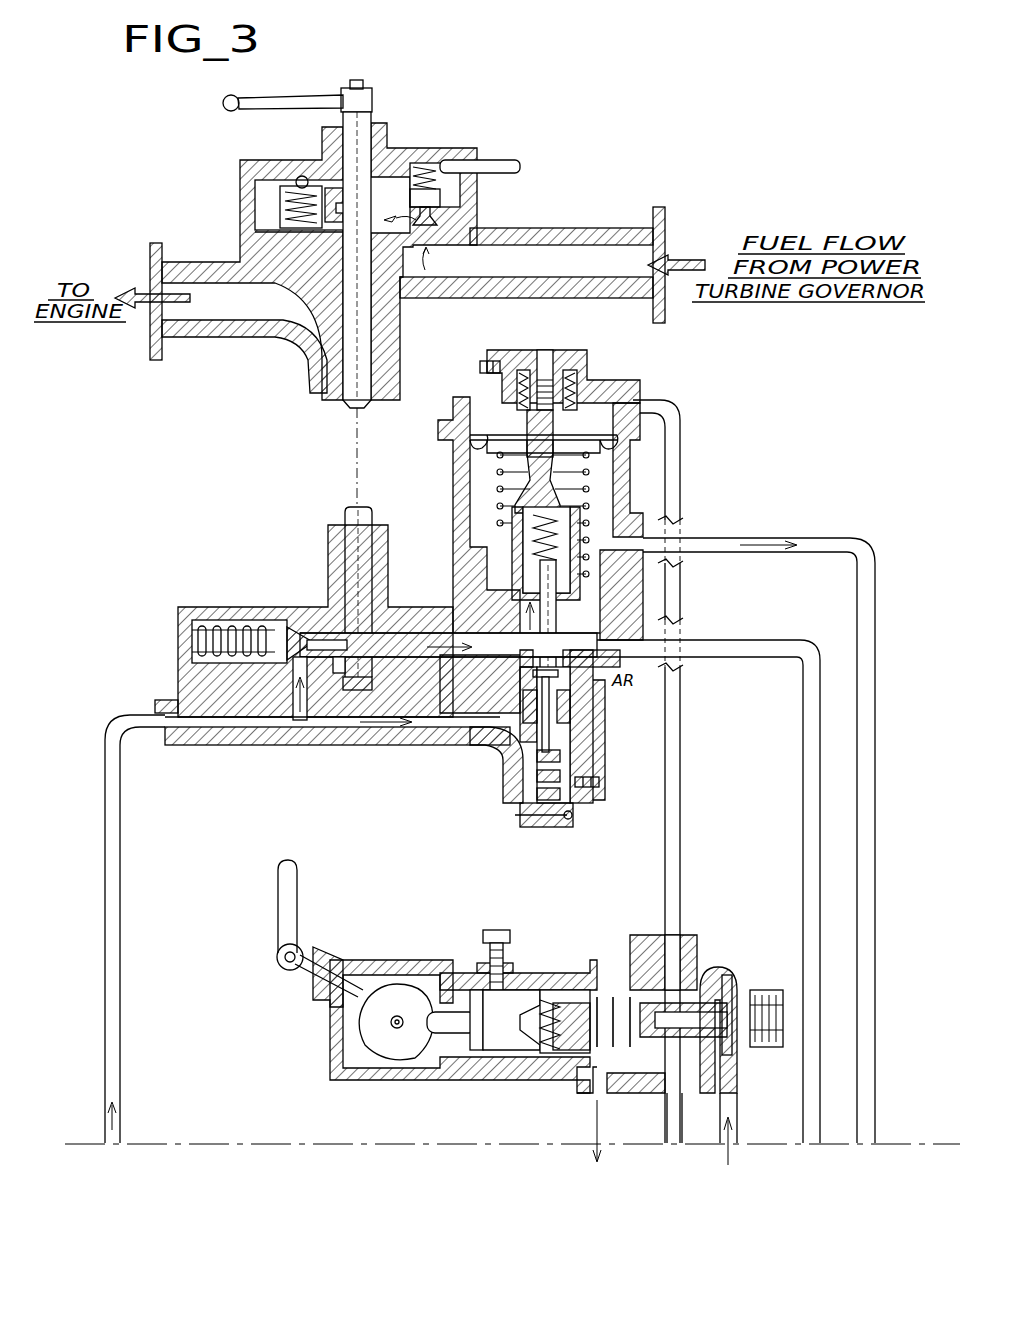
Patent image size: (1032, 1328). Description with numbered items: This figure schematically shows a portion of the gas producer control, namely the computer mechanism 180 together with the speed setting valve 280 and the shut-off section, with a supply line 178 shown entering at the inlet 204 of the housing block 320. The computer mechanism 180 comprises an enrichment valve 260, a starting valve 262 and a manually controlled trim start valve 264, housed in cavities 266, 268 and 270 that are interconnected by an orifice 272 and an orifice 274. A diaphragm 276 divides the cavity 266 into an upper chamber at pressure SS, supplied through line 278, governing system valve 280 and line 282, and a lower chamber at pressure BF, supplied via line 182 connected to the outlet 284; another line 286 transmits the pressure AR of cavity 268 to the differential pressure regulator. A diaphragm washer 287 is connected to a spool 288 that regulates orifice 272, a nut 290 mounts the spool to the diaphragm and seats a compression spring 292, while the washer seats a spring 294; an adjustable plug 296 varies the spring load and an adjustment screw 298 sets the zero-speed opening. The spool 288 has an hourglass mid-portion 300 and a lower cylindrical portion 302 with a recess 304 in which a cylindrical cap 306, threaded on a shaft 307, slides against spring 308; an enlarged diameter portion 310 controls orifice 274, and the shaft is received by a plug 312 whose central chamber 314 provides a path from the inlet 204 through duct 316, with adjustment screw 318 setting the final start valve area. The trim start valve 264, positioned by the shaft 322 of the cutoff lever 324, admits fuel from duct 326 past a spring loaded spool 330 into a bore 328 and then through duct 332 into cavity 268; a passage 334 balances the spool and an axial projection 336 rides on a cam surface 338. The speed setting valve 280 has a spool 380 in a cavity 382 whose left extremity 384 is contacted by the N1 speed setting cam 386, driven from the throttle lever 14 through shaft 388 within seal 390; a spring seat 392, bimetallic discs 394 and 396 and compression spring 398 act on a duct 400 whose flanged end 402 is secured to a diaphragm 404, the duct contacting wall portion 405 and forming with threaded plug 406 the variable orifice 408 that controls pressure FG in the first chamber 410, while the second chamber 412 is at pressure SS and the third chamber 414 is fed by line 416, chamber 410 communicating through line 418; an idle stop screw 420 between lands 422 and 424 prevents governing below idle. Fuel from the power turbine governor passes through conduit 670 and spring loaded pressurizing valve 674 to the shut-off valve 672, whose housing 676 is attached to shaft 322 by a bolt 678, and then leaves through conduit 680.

The throttle lever 14 is at (270, 882).
The fuel supply conduit 178 is at (105, 892).
The computer mechanism 180 is at (202, 443).
The line 182 is at (847, 540).
The inlet 204 is at (165, 712).
The enrichment valve 260 is at (760, 424).
The starting valve 262 is at (474, 810).
The manually controlled trim start valve 264 is at (242, 542).
The cavity 266 is at (480, 480).
The cavity 268 is at (643, 592).
The cavity 270 is at (560, 715).
The orifice 272 is at (510, 530).
The orifice 274 is at (560, 690).
The diaphragm 276 is at (643, 452).
The line 278 is at (682, 1137).
The governing system valve 280 is at (240, 1060).
The line 282 is at (687, 412).
The outlet 284 is at (665, 572).
The line 286 is at (815, 613).
The diaphragm washer 287 is at (468, 428).
The spool 288 is at (458, 466).
The nut 290 is at (493, 400).
The compression spring 292 is at (620, 360).
The spring 294 is at (512, 498).
The adjustable plug 296 is at (578, 357).
The adjustment screw 298 is at (545, 348).
The hourglass shaped mid-portion 300 is at (605, 505).
The lower cylindrical portion 302 is at (518, 520).
The recess 304 is at (650, 515).
The cylindrical cap 306 is at (540, 572).
The shaft 307 is at (643, 610).
The spring 308 is at (540, 548).
The enlarged diameter portion 310 is at (562, 700).
The plug 312 is at (600, 776).
The central chamber 314 is at (565, 752).
The duct 316 is at (230, 720).
The adjustment screw 318 is at (573, 815).
The housing block 320 is at (510, 748).
The shaft 322 is at (374, 115).
The cutoff lever 324 is at (318, 95).
The duct 326 is at (300, 760).
The bore 328 is at (205, 600).
The spring loaded spool 330 is at (280, 610).
The duct 332 is at (412, 632).
The passage 334 is at (290, 665).
The axial projection 336 is at (315, 630).
The cam surface 338 is at (340, 673).
The spool 380 is at (495, 1050).
The cavity 382 is at (350, 1080).
The left extremity 384 is at (440, 1040).
The N1 speed setting cam 386 is at (372, 1025).
The shaft 388 is at (300, 978).
The seal 390 is at (320, 947).
The spring seat 392 is at (553, 1050).
The bimetallic fuel temperature compensating disc 394 is at (570, 975).
The bimetallic fuel temperature compensating disc 396 is at (572, 1055).
The compression spring 398 is at (605, 1050).
The duct 400 is at (705, 968).
The flanged end 402 is at (635, 933).
The diaphragm 404 is at (615, 1093).
The wall portion 405 is at (728, 1050).
The threaded plug 406 is at (768, 990).
The variable orifice 408 is at (730, 975).
The first chamber 410 is at (600, 965).
The second chamber 412 is at (665, 1110).
The third chamber 414 is at (737, 1065).
The line 416 is at (733, 1112).
The line 418 is at (590, 1135).
The idle stop screw 420 is at (497, 928).
The land 422 is at (475, 990).
The land 424 is at (533, 973).
The conduit 670 is at (548, 258).
The shut-off valve 672 is at (300, 232).
The spring loaded pressurizing valve 674 is at (460, 203).
The housing 676 is at (262, 198).
The valve member 678 is at (338, 192).
The conduit 680 is at (222, 328).